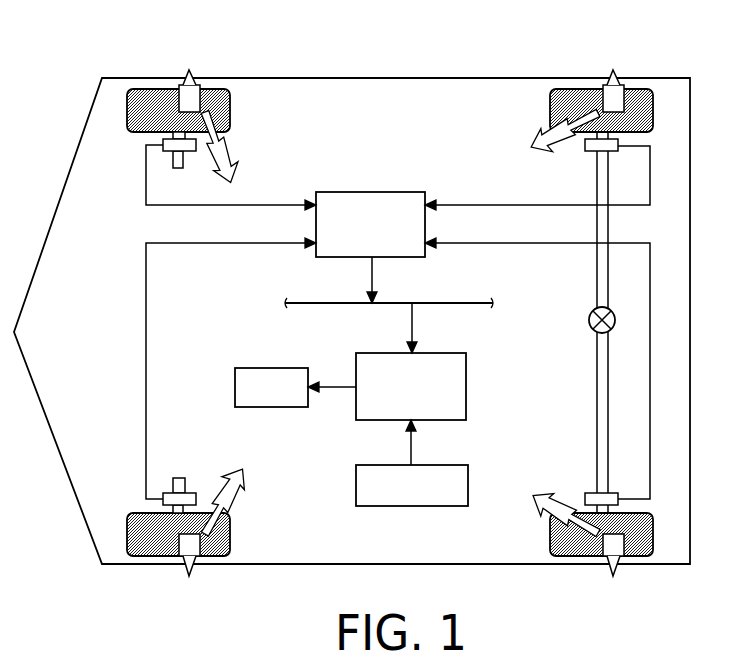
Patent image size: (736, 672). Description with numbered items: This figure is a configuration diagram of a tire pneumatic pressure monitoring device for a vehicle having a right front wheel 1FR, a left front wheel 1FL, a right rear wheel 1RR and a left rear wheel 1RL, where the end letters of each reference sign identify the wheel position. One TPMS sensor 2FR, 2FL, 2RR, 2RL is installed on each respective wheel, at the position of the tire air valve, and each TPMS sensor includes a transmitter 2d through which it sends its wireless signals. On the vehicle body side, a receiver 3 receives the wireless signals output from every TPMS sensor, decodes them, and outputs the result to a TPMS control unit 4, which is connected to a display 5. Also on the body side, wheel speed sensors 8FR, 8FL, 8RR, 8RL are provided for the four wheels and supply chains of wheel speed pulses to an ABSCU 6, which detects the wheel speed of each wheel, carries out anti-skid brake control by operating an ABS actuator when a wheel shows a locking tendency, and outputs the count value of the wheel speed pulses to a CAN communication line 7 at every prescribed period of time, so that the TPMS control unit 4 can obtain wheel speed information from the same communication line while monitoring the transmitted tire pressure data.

The right front wheel 1FR is at (137, 89).
The left front wheel 1FL is at (137, 556).
The right rear wheel 1RR is at (573, 89).
The left rear wheel 1RL is at (575, 556).
The TPMS sensor 2FR is at (212, 95).
The TPMS sensor 2FL is at (212, 556).
The TPMS sensor 2RR is at (642, 95).
The TPMS sensor 2RL is at (642, 556).
The transmitter 2d is at (190, 70).
The wheel speed sensor 8FR is at (167, 120).
The wheel speed sensor 8FL is at (167, 530).
The wheel speed sensor 8RR is at (590, 153).
The wheel speed sensor 8RL is at (590, 492).
The receiver 3 is at (355, 489).
The TPMS control unit 4 is at (468, 388).
The display 5 is at (258, 367).
The ABSCU 6 is at (393, 191).
The CAN communication line 7 is at (452, 302).